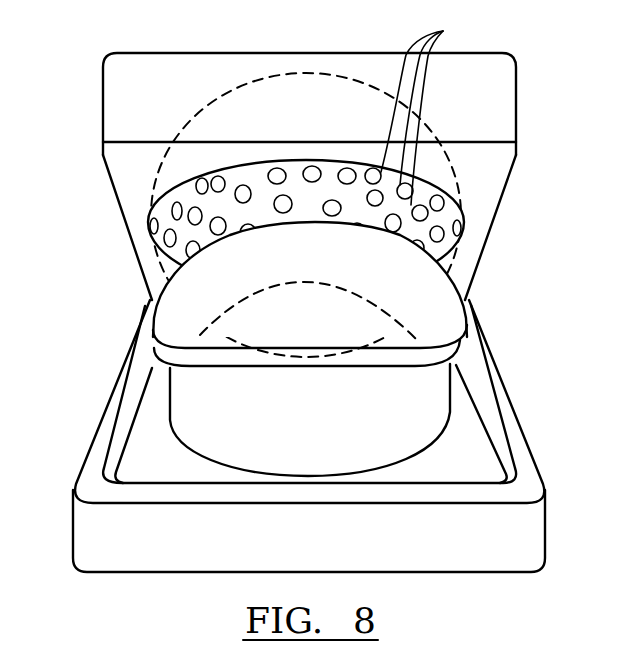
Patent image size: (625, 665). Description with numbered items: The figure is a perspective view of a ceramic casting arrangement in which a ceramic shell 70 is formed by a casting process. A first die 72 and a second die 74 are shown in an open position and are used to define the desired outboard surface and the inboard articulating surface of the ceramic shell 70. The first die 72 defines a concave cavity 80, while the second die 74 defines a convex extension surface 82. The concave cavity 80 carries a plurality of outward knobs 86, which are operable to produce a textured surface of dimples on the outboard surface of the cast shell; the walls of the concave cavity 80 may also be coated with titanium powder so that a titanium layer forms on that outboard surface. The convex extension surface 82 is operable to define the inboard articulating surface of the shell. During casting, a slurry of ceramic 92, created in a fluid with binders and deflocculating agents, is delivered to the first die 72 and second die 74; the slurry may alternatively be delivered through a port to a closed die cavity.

The ceramic shell 70 is at (450, 323).
The first die 72 is at (130, 102).
The second die 74 is at (113, 390).
The concave cavity 80 is at (440, 234).
The convex extension surface 82 is at (200, 327).
The outward knobs 86 is at (429, 110).
The slurry of ceramic 92 is at (296, 335).